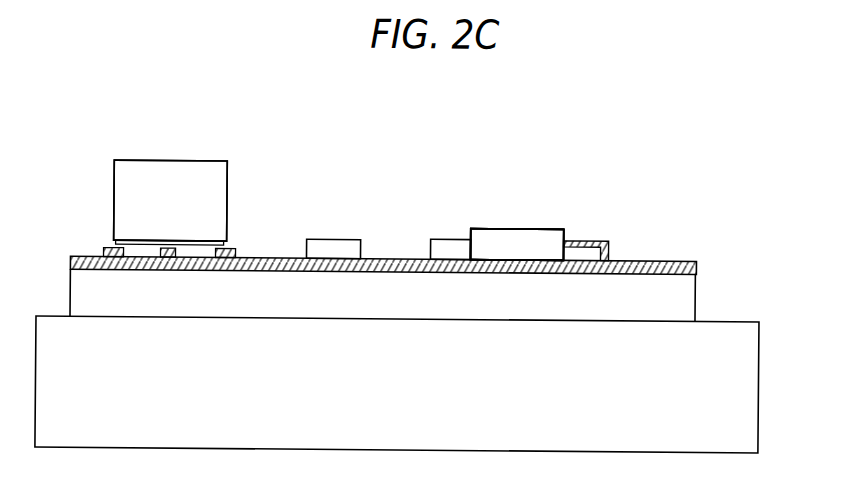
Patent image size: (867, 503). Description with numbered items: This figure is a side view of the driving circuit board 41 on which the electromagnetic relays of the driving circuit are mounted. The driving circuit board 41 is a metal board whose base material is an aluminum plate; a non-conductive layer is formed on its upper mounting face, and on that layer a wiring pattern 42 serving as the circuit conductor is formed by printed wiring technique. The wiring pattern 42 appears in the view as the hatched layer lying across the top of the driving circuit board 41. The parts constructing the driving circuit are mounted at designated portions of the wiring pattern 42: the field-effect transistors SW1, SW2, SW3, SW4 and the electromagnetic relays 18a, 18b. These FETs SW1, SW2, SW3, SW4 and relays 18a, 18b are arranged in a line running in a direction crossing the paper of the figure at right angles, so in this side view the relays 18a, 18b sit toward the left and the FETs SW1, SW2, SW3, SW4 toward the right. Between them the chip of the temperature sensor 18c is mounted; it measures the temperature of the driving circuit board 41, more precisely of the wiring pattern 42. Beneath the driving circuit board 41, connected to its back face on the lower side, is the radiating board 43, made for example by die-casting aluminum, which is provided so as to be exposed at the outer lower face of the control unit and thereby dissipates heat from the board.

The electromagnetic relay 18a is at (170, 159).
The electromagnetic relay 18b is at (171, 200).
The temperature sensor 18c is at (333, 236).
The FET SW1 is at (535, 208).
The FET SW2 is at (516, 245).
The FET SW3 is at (516, 245).
The FET SW4 is at (516, 245).
The driving circuit board 41 is at (695, 292).
The wiring pattern 42 is at (657, 256).
The radiating board 43 is at (760, 379).